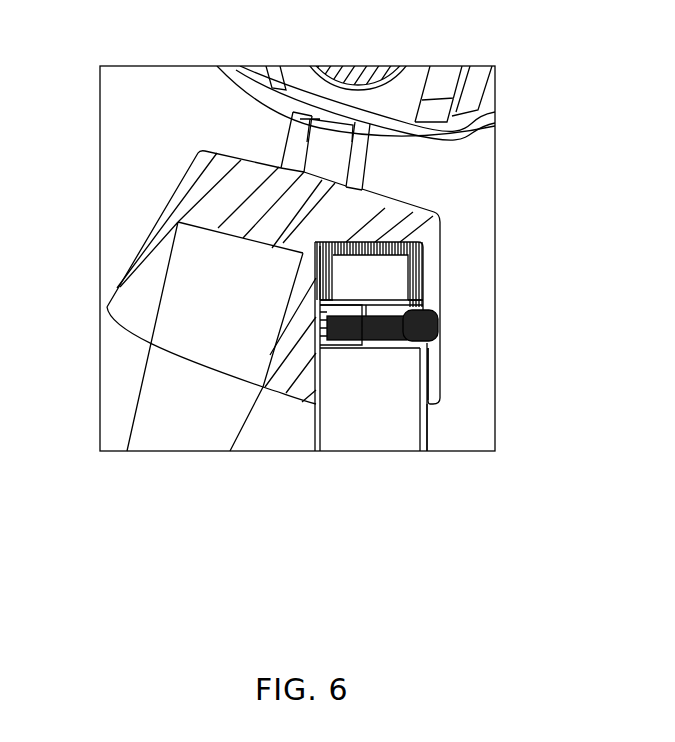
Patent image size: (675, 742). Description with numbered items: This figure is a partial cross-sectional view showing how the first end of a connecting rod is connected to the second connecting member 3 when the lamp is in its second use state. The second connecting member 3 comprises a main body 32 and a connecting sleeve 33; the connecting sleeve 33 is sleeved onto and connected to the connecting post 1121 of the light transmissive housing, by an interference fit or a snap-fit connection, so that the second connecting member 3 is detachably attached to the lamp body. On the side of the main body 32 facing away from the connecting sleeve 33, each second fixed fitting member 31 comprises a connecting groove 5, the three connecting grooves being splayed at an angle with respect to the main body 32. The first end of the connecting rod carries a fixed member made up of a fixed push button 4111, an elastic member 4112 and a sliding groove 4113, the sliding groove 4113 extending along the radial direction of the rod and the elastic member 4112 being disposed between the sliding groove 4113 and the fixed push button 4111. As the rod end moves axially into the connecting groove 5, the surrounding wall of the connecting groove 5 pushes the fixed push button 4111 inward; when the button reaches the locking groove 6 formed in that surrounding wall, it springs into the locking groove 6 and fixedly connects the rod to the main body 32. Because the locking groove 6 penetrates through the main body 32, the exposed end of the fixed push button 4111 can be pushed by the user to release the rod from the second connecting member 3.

The connecting post 1121 is at (318, 131).
The second connecting member 3 is at (143, 203).
The main body 32 is at (207, 270).
The connecting sleeve 33 is at (365, 186).
The sliding groove 4113 is at (383, 312).
The locking groove 6 is at (430, 312).
The fixed push button 4111 is at (440, 323).
The connecting groove 5 is at (432, 384).
The second fixed fitting member 31 is at (448, 410).
The elastic member 4112 is at (362, 340).